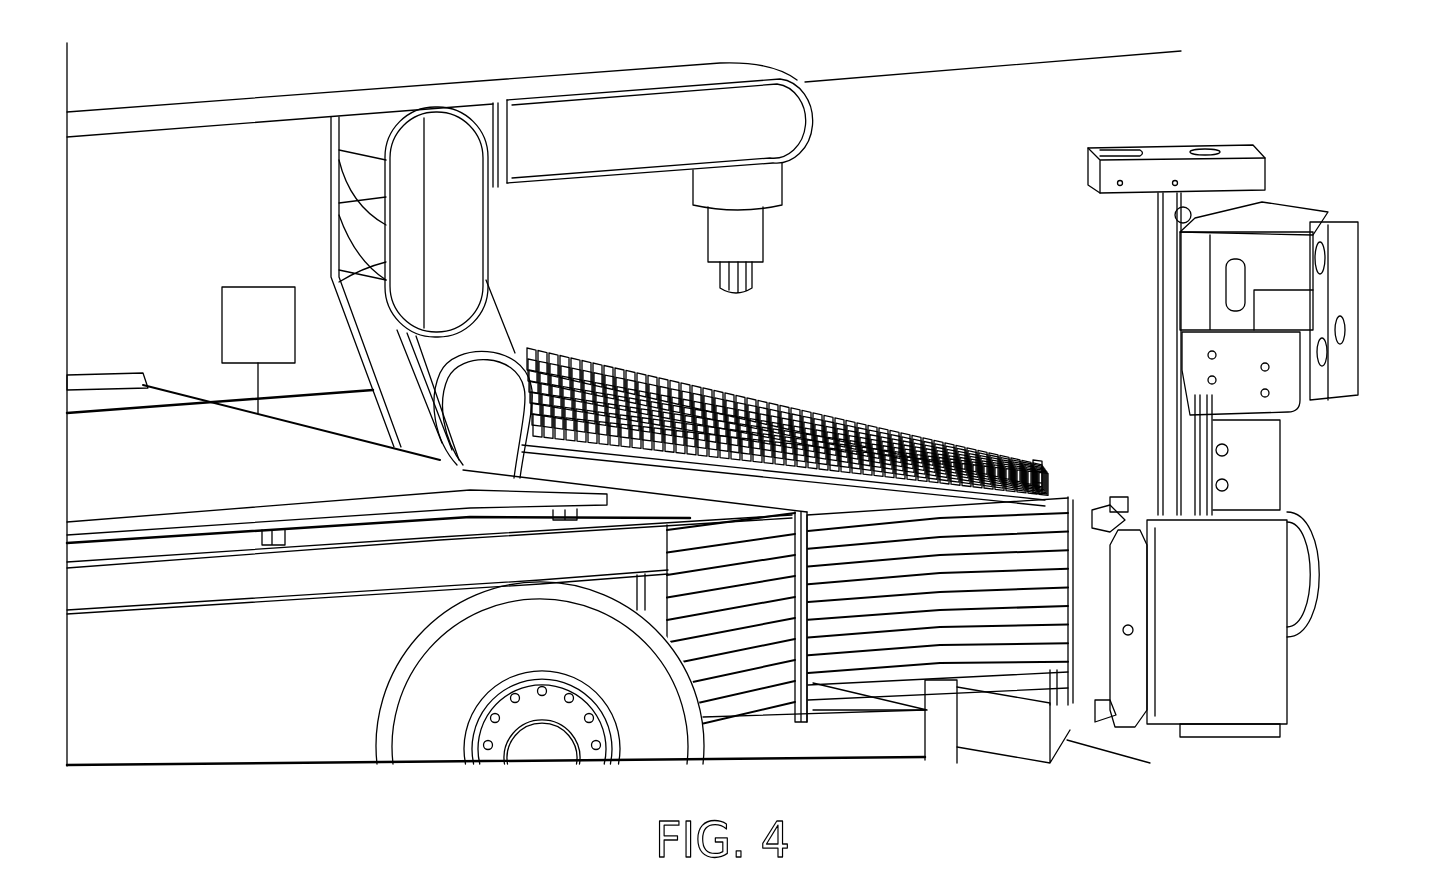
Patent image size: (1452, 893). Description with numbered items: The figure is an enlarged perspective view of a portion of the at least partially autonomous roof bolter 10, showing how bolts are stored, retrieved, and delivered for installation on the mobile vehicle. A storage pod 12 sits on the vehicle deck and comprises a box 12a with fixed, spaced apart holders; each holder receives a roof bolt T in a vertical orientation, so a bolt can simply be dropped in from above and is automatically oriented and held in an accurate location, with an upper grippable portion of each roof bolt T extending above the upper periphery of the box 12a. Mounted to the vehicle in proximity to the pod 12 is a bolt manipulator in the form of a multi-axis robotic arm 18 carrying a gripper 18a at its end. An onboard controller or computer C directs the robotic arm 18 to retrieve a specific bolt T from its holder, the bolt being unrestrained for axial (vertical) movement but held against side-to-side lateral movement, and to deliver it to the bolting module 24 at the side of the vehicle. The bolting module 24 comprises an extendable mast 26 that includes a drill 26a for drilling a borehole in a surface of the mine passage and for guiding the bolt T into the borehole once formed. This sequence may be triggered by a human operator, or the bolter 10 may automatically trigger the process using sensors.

The roof bolter 10 is at (271, 742).
The pod 12 is at (897, 322).
The box 12a is at (1077, 520).
The robotic arm 18 is at (780, 125).
The gripper 18a is at (742, 290).
The bolting module 24 is at (1340, 162).
The mast 26 is at (1140, 288).
The drill 26a is at (1128, 478).
The roof bolt T is at (935, 430).
The controller C is at (258, 350).